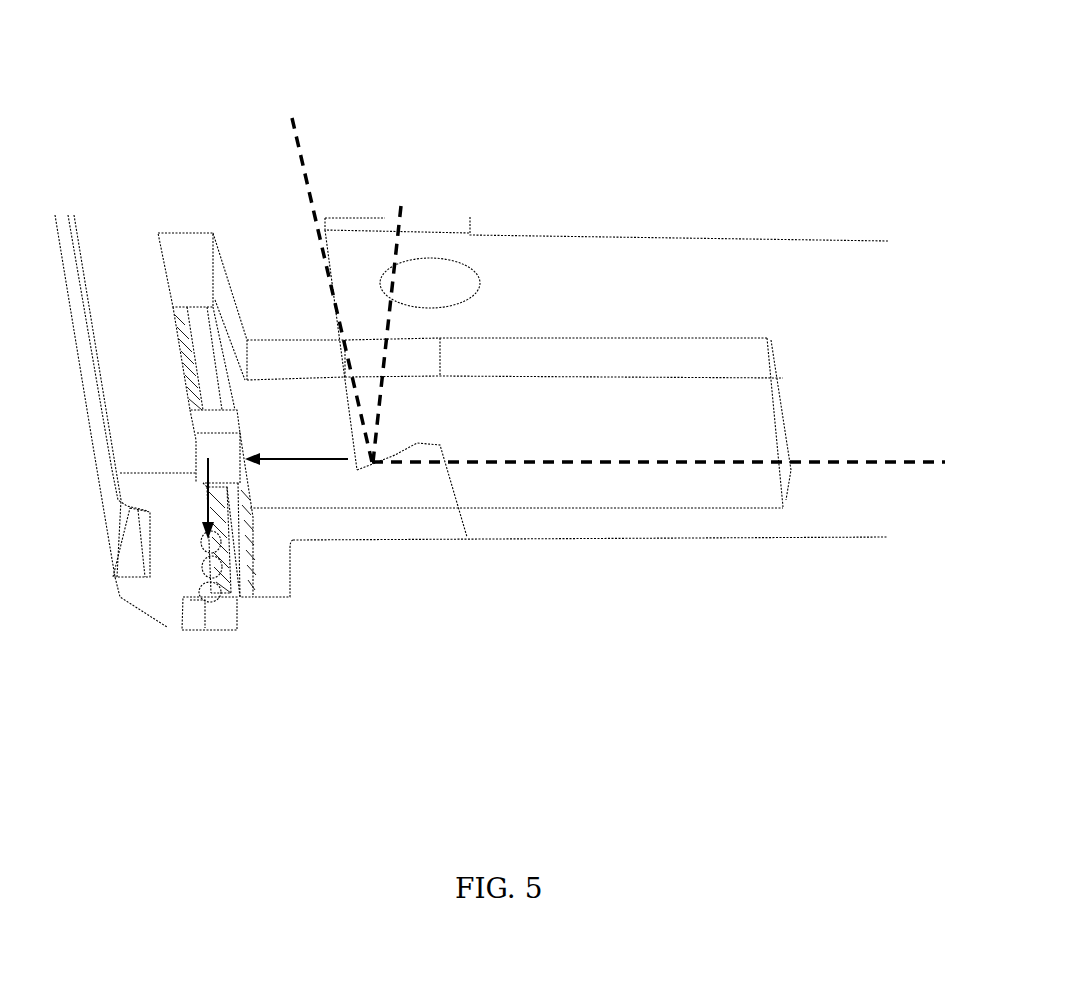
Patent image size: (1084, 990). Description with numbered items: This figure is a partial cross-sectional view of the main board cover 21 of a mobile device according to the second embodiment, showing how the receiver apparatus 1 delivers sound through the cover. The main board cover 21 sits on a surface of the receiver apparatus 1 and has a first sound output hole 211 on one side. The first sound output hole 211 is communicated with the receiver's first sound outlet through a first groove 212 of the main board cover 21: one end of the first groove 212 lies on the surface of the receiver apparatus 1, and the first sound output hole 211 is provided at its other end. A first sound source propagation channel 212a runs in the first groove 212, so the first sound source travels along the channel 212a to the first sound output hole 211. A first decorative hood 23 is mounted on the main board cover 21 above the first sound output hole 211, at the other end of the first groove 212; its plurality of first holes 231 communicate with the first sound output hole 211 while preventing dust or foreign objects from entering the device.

The receiver apparatus 1 is at (287, 148).
The main board cover 21 is at (832, 522).
The first sound output hole 211 is at (248, 543).
The first groove 212 is at (542, 507).
The first sound source propagation channel 212a is at (380, 490).
The first decorative hood 23 is at (180, 580).
The first holes 231 is at (208, 584).